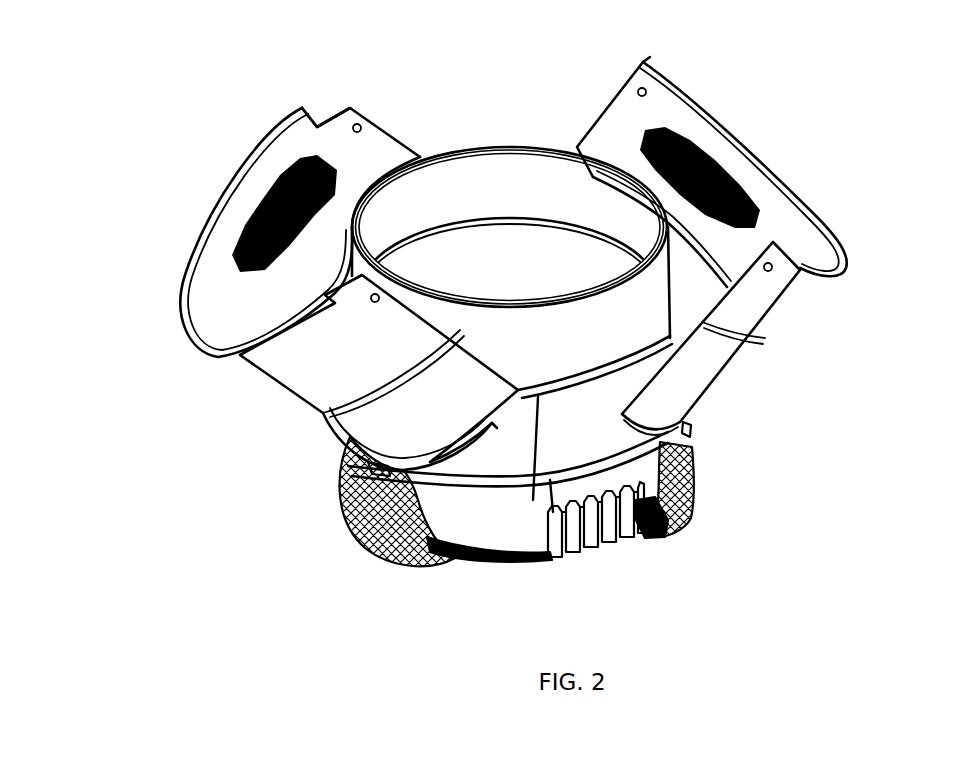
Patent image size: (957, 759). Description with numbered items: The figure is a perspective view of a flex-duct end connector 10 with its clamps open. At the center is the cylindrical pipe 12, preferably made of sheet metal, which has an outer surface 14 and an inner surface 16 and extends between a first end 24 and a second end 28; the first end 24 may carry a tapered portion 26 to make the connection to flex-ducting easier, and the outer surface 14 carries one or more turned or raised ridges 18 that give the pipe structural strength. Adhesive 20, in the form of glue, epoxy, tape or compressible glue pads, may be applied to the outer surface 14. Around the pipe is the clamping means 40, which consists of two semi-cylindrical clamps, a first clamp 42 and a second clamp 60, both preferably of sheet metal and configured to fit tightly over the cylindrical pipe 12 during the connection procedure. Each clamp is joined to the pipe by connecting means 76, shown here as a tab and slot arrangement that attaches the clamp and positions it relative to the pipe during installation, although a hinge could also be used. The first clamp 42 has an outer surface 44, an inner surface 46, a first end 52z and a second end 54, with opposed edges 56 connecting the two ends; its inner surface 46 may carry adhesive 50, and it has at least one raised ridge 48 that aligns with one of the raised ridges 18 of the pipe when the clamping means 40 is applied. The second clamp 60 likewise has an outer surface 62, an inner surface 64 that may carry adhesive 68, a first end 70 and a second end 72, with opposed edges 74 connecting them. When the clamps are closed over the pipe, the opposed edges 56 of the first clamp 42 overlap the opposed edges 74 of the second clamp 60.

The flex-duct end connector 10 is at (128, 136).
The cylindrical pipe 12 is at (494, 262).
The outer surface 14 is at (500, 462).
The inner surface 16 is at (658, 80).
The raised ridges 18 is at (538, 397).
The adhesive 20 is at (620, 327).
The first end 24 is at (517, 148).
The tapered portion 26 is at (557, 163).
The second end 28 is at (633, 530).
The clamping means 40 is at (117, 260).
The first clamp 42 is at (333, 367).
The outer surface 44 is at (298, 378).
The inner surface 46 is at (333, 137).
The raised ridge 48 is at (317, 418).
The adhesive 50 is at (303, 183).
The strap outer surface 52z is at (213, 208).
The second end 54 is at (417, 472).
The opposed edges 56 is at (382, 130).
The second clamp 60 is at (655, 407).
The outer surface 62 is at (757, 317).
The inner surface 64 is at (677, 102).
The adhesive 68 is at (688, 158).
The first end 70 is at (798, 187).
The second end 72 is at (667, 510).
The opposed edges 74 is at (620, 98).
The connecting means 76 is at (367, 463).